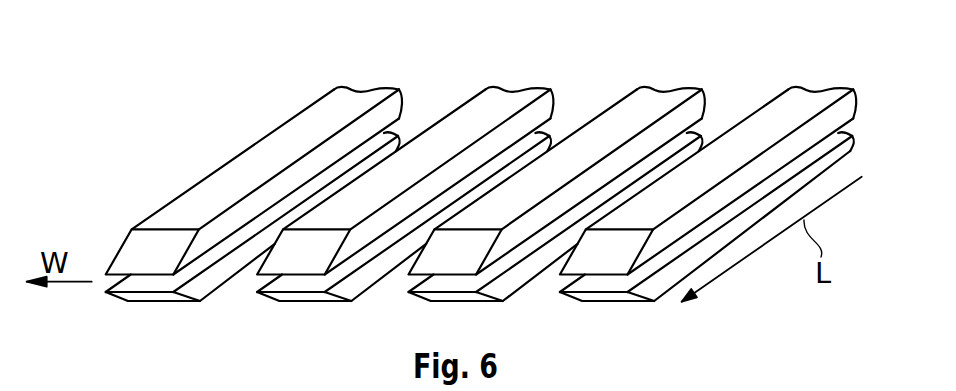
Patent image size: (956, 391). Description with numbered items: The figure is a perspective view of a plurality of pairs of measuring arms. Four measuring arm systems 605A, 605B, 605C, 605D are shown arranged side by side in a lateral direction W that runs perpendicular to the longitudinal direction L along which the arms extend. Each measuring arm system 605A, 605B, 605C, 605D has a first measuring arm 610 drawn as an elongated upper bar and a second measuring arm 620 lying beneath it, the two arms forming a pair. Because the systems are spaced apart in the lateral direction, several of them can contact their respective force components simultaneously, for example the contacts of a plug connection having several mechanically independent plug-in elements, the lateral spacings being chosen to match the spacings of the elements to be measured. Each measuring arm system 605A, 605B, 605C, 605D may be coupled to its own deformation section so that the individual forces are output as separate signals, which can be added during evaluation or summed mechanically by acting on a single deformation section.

The measuring arm system 605A is at (218, 171).
The measuring arm system 605B is at (520, 83).
The measuring arm system 605C is at (668, 83).
The measuring arm system 605D is at (827, 83).
The first measuring arm 610 is at (187, 207).
The second measuring arm 620 is at (125, 300).